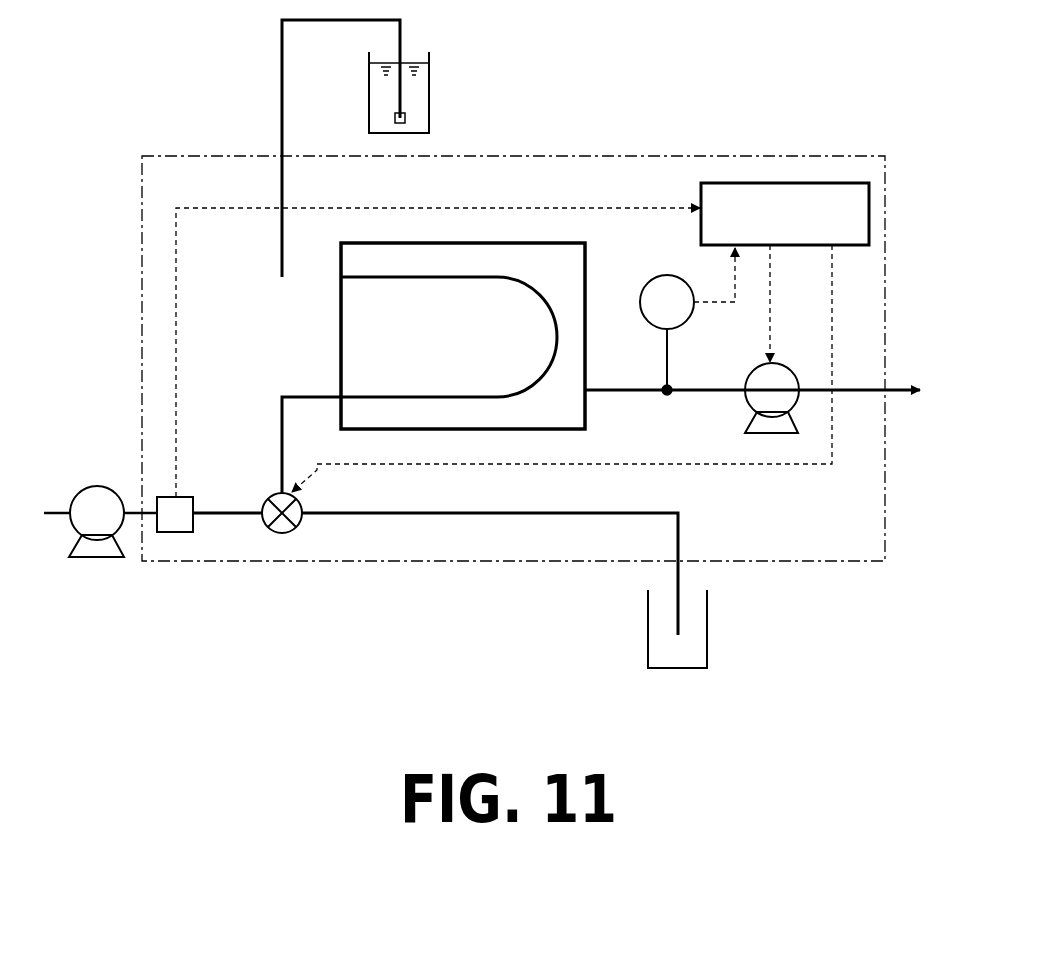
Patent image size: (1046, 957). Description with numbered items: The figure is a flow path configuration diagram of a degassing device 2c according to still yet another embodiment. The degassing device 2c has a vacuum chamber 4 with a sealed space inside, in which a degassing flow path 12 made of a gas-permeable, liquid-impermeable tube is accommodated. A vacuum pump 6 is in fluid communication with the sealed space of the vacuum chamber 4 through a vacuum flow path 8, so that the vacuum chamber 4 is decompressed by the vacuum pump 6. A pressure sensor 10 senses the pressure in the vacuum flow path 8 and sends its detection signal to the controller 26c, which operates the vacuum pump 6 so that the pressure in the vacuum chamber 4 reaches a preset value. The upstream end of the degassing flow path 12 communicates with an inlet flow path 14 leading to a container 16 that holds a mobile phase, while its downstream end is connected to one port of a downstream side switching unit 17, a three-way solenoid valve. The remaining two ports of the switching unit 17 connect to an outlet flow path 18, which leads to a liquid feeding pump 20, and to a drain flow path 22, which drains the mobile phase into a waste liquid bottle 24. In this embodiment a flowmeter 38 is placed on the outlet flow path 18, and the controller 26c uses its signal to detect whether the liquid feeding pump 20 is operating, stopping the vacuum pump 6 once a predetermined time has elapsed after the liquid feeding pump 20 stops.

The degassing device 2c is at (848, 155).
The vacuum chamber 4 is at (340, 333).
The vacuum pump 6 is at (788, 366).
The vacuum flow path 8 is at (623, 393).
The pressure sensor 10 is at (658, 280).
The degassing flow path 12 is at (410, 395).
The inlet flow path 14 is at (282, 122).
The container 16 is at (430, 92).
The downstream side switching unit 17 is at (275, 495).
The outlet flow path 18 is at (230, 510).
The liquid feeding pump 20 is at (88, 488).
The drain flow path 22 is at (680, 533).
The waste liquid bottle 24 is at (710, 630).
The controller 26c is at (872, 196).
The flowmeter 38 is at (180, 532).